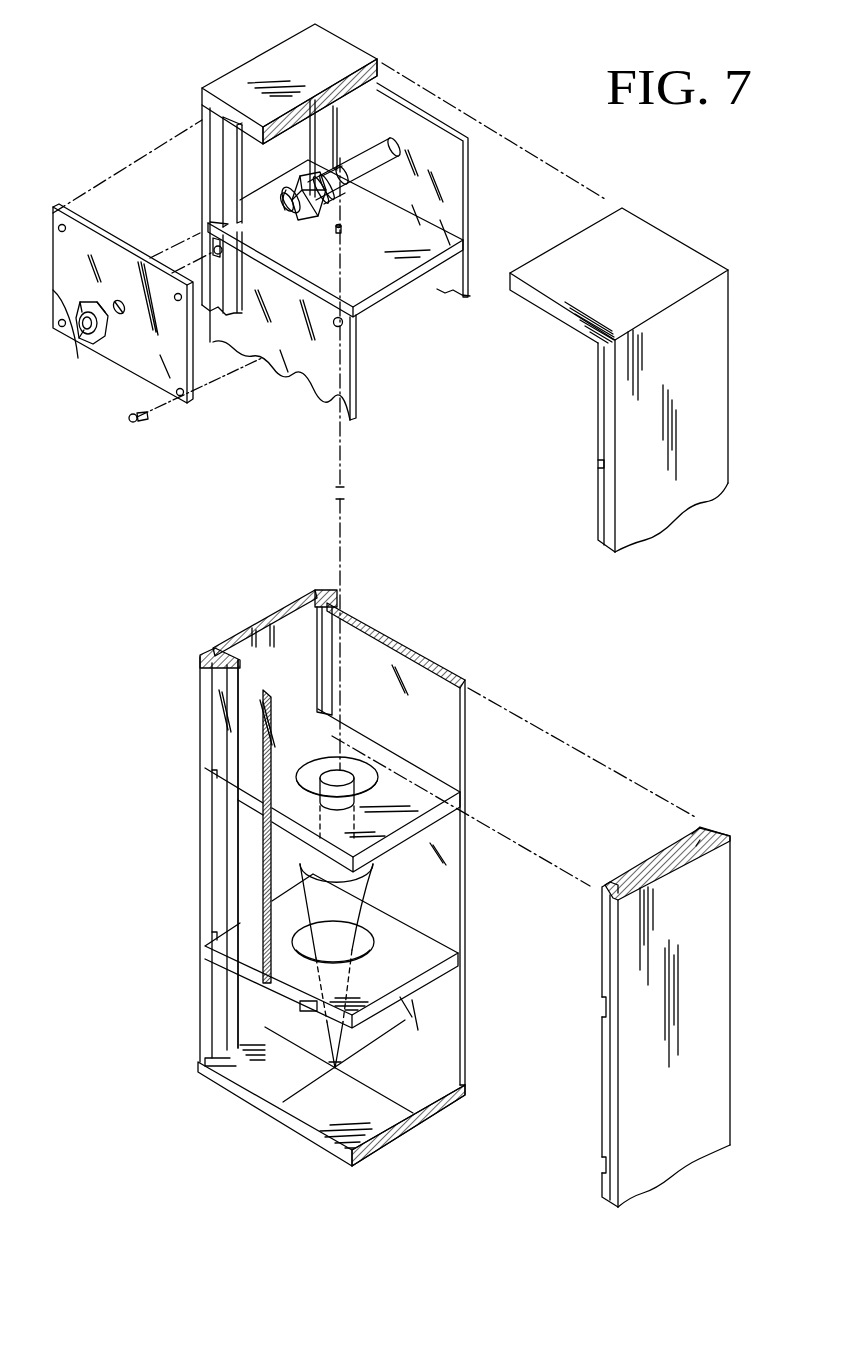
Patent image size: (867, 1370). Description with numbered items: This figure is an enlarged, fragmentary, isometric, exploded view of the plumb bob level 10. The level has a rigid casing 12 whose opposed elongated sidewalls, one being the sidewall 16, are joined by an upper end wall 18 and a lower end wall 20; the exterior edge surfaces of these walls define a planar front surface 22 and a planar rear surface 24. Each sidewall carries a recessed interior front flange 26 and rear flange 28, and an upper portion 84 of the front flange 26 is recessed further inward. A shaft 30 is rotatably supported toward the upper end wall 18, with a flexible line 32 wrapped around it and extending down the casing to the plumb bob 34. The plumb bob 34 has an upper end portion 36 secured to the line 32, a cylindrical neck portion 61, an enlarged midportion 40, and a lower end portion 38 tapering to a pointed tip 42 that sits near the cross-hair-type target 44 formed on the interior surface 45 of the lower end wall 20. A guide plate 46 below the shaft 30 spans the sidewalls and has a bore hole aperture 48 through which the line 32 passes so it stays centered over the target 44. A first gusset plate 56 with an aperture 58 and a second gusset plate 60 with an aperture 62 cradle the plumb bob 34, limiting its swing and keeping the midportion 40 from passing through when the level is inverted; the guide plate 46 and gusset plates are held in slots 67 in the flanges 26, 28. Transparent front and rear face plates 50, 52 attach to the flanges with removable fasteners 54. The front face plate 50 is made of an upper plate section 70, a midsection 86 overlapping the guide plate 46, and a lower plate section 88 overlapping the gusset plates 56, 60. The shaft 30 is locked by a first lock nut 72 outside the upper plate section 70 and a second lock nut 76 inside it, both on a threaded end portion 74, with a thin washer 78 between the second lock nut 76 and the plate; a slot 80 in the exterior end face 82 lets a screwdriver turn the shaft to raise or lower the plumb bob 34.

The plumb bob level 10 is at (166, 526).
The casing 12 is at (200, 800).
The sidewall 16 is at (716, 316).
The upper end wall 18 is at (340, 52).
The lower end wall 20 is at (428, 1118).
The front surface 22 is at (202, 94).
The rear surface 24 is at (470, 1094).
The front flange 26 is at (222, 157).
The rear flange 28 is at (338, 120).
The shaft 30 is at (395, 153).
The line 32 is at (344, 208).
The plumb bob 34 is at (325, 924).
The upper end portion 36 is at (347, 790).
The lower end portion 38 is at (362, 1050).
The midportion 40 is at (355, 888).
The pointed tip 42 is at (332, 1068).
The cross-hair-type target 44 is at (310, 1088).
The interior surface 45 is at (382, 1120).
The guide plate 46 is at (390, 285).
The bore hole aperture 48 is at (341, 231).
The front face plate 50 is at (78, 356).
The rear face plate 52 is at (470, 188).
The fastener 54 is at (212, 250).
The first gusset plate 56 is at (435, 982).
The aperture 58 is at (365, 943).
The second gusset plate 60 is at (433, 822).
The neck portion 61 is at (333, 793).
The aperture 62 is at (360, 775).
The slot 67 is at (220, 221).
The upper plate section 70 is at (123, 348).
The first lock nut 72 is at (85, 302).
The threaded end portion 74 is at (305, 222).
The second lock nut 76 is at (326, 216).
The washer 78 is at (285, 182).
The slot 80 is at (289, 207).
The exterior end face 82 is at (288, 188).
The upper portion 84 is at (237, 180).
The midsection 86 is at (355, 390).
The lower plate section 88 is at (268, 693).